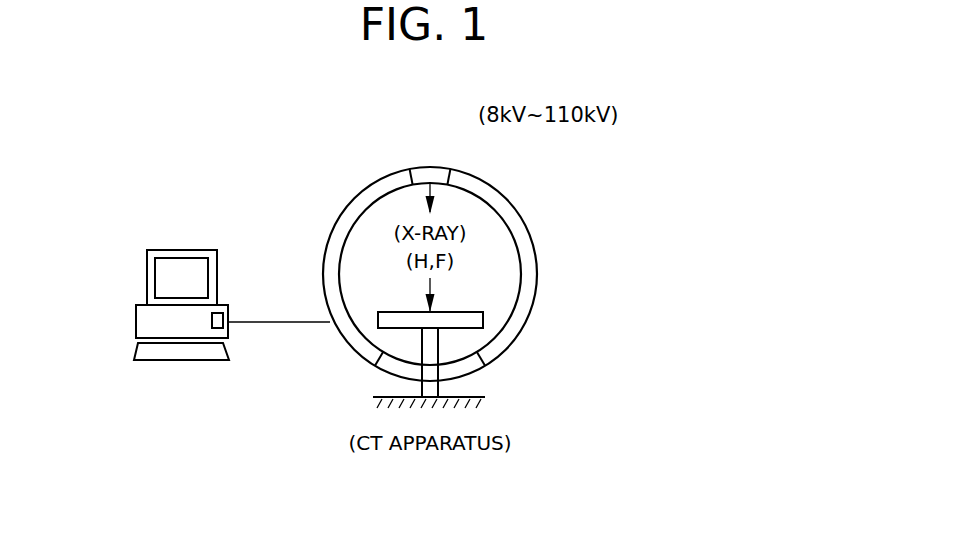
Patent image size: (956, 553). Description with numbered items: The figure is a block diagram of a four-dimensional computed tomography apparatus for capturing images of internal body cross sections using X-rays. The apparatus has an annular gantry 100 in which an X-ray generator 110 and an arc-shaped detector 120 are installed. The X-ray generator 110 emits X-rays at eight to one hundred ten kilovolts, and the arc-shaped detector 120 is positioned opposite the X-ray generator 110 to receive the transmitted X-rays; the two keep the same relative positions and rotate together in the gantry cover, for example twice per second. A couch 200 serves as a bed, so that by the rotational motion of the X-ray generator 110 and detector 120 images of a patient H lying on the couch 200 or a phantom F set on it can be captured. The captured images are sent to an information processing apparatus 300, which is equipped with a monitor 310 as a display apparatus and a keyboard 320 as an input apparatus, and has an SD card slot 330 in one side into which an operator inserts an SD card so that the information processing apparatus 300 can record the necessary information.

The gantry 100 is at (523, 237).
The X-ray generator 110 is at (430, 177).
The arc-shaped detector 120 is at (463, 369).
The couch 200 is at (462, 313).
The information processing apparatus 300 is at (187, 312).
The monitor 310 is at (183, 250).
The keyboard 320 is at (167, 350).
The SD card slot 330 is at (227, 325).